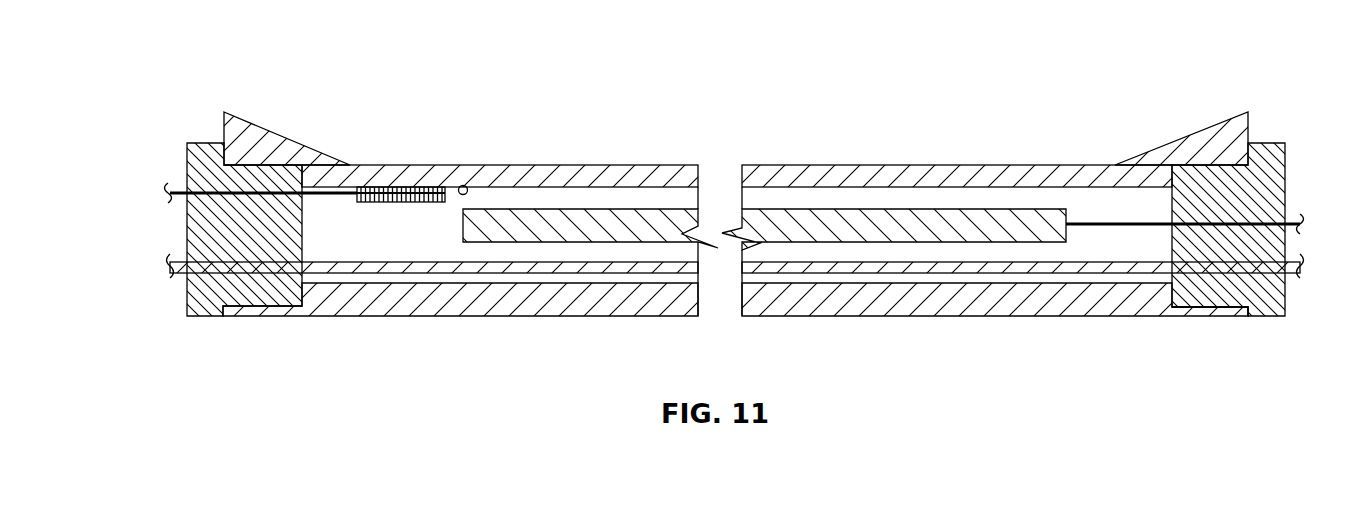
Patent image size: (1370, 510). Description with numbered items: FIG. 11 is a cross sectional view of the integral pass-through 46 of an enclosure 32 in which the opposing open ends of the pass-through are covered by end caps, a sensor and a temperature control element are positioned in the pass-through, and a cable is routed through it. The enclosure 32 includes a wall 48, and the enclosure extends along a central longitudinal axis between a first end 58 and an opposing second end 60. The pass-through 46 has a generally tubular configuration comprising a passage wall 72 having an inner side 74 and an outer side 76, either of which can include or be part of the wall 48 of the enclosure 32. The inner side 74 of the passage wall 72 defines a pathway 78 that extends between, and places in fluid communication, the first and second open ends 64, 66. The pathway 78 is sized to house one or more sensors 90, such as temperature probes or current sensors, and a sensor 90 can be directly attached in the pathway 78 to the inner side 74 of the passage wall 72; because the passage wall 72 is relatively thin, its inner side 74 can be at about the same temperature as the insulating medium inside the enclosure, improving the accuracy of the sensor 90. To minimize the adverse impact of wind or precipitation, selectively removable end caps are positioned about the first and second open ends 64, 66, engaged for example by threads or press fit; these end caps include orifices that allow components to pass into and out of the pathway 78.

The enclosure 32 is at (1195, 142).
The pass-through 46 is at (1025, 172).
The wall 48 is at (1235, 212).
The first end 58 is at (1219, 120).
The second end 60 is at (249, 220).
The first open end 64 is at (1248, 307).
The second open end 66 is at (238, 132).
The passage wall 72 is at (395, 302).
The inner side 74 is at (466, 186).
The outer side 76 is at (512, 165).
The pathway 78 is at (817, 197).
The sensor 90 is at (394, 188).